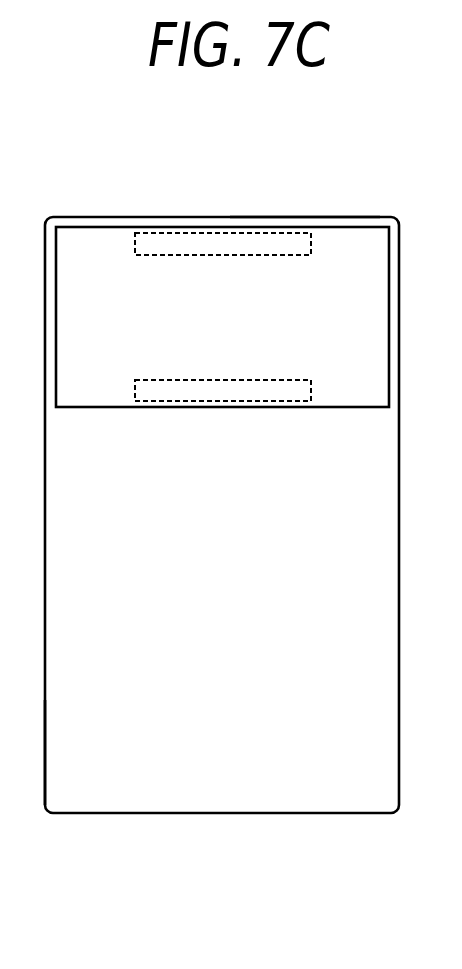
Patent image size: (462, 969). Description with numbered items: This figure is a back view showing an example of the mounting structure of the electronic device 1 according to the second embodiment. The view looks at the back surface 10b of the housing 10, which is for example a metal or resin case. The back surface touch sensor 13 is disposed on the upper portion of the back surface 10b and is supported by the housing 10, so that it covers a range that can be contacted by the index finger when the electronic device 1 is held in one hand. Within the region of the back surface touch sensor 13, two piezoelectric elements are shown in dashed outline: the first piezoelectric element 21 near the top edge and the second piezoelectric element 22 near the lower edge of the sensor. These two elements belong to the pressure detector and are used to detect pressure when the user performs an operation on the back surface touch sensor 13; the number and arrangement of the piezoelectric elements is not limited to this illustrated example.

The electronic device 1 is at (232, 819).
The housing 10 is at (399, 552).
The back surface 10b is at (252, 215).
The back surface touch sensor 13 is at (225, 408).
The first piezoelectric element 21 is at (182, 233).
The second piezoelectric element 22 is at (169, 402).